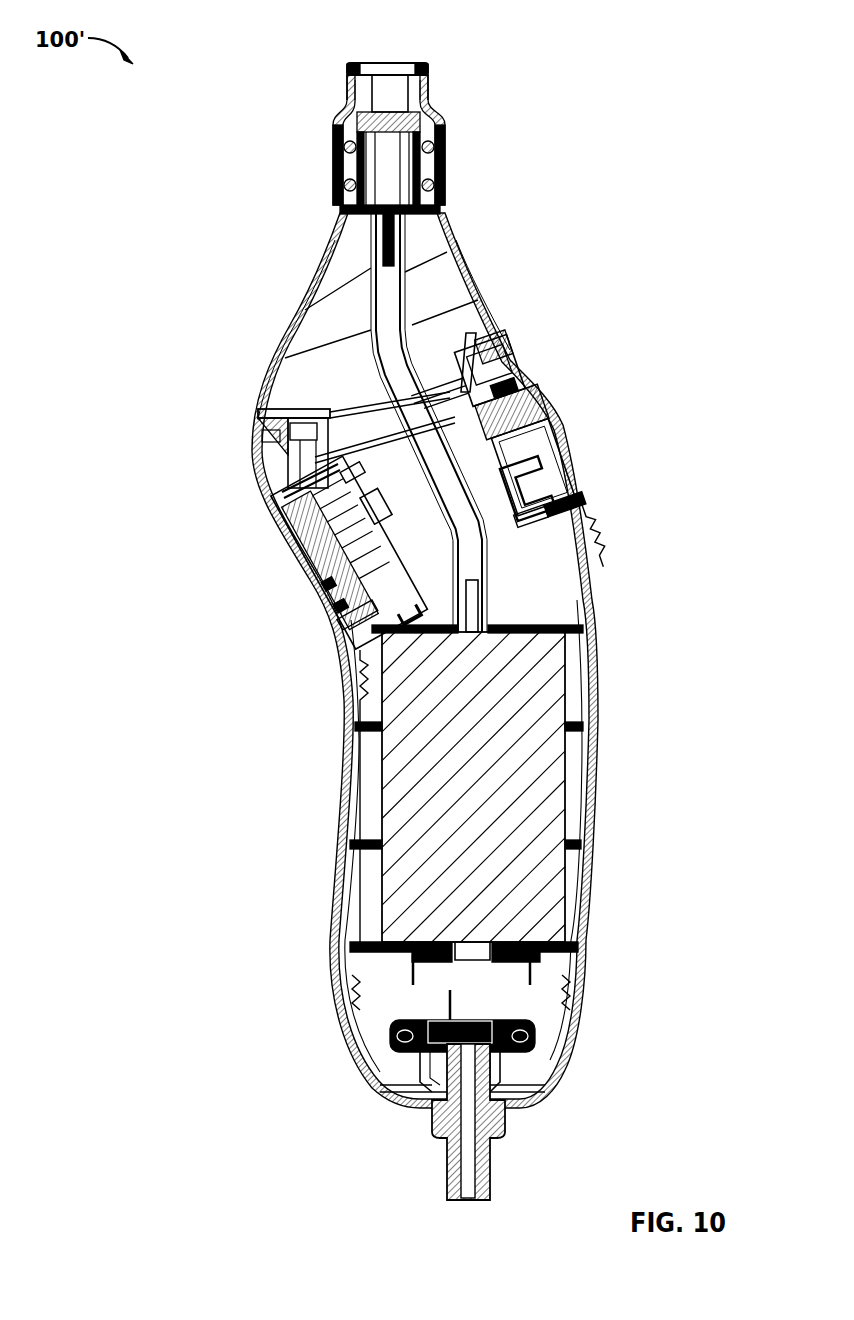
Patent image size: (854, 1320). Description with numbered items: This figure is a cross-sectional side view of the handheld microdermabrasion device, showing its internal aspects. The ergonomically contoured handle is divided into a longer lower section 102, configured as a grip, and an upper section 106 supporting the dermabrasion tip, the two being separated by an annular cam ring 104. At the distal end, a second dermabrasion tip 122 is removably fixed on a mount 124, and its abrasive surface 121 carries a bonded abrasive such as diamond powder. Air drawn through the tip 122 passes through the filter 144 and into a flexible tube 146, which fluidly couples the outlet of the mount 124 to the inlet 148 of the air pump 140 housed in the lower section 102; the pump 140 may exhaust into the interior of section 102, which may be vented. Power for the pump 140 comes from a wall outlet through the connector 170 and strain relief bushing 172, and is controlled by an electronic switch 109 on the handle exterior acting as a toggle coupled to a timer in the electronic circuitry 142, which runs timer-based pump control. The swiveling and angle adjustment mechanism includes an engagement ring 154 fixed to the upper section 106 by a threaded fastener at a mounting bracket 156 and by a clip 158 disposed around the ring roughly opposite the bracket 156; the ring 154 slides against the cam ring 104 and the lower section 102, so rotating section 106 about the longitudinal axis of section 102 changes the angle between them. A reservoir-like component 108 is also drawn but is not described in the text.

The lower articulating section 102 is at (587, 803).
The annular cam ring 104 is at (512, 350).
The upper articulating section 106 is at (447, 263).
The reservoir 108 is at (542, 415).
The electronic switch 109 is at (330, 607).
The abrasive surface 121 is at (417, 63).
The second dermabrasion tip 122 is at (357, 100).
The mount 124 is at (347, 170).
The air pump 140 is at (533, 703).
The electronic circuitry 142 is at (387, 580).
The filter 144 is at (407, 120).
The flexible tube 146 is at (376, 343).
The inlet 148 is at (473, 597).
The engagement ring 154 is at (350, 452).
The mounting bracket 156 is at (307, 415).
The clip 158 is at (473, 343).
The connector 170 is at (533, 1035).
The strain relief bushing 172 is at (492, 1147).